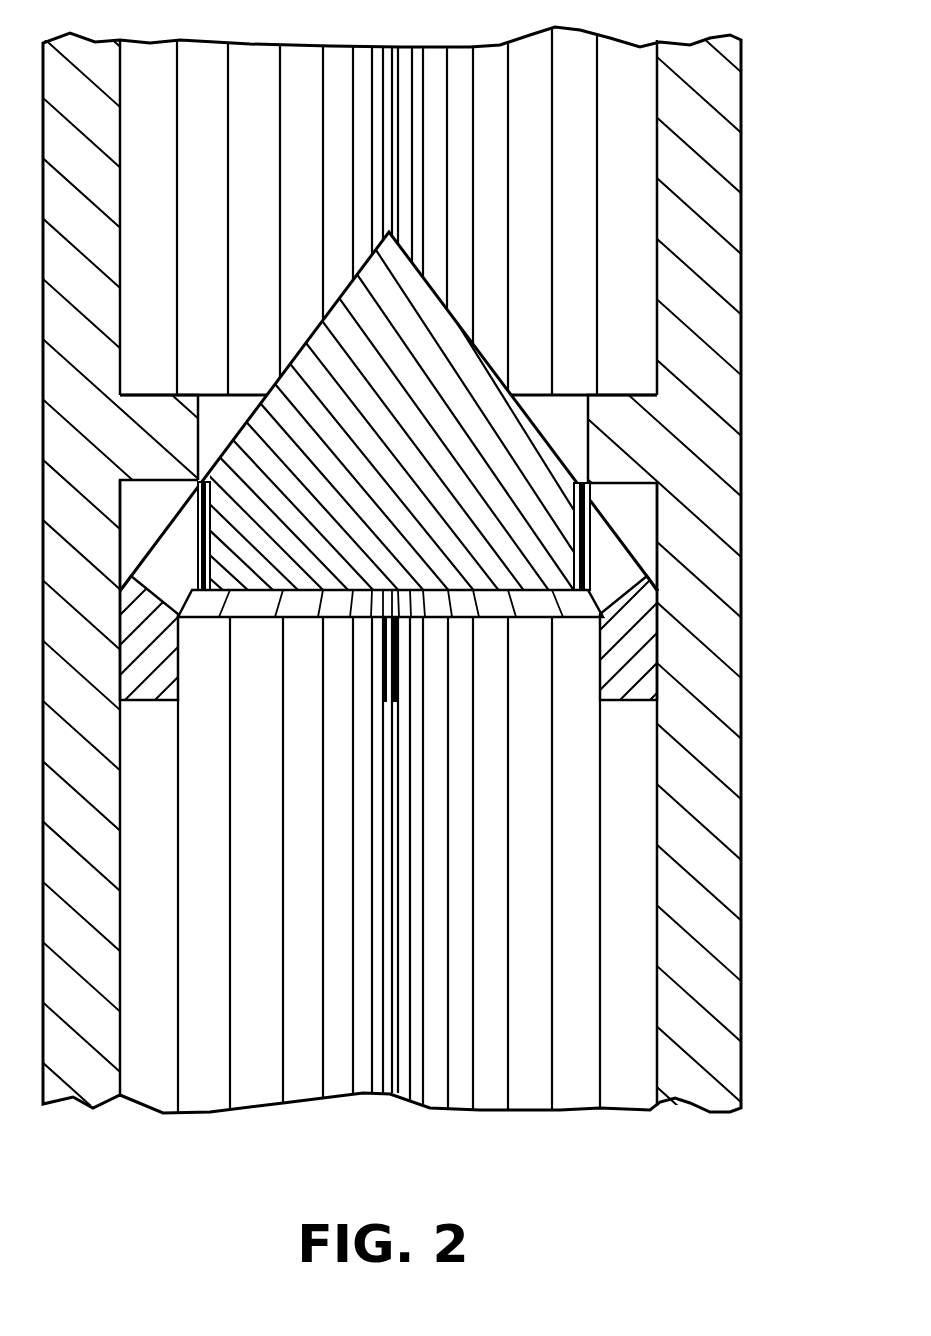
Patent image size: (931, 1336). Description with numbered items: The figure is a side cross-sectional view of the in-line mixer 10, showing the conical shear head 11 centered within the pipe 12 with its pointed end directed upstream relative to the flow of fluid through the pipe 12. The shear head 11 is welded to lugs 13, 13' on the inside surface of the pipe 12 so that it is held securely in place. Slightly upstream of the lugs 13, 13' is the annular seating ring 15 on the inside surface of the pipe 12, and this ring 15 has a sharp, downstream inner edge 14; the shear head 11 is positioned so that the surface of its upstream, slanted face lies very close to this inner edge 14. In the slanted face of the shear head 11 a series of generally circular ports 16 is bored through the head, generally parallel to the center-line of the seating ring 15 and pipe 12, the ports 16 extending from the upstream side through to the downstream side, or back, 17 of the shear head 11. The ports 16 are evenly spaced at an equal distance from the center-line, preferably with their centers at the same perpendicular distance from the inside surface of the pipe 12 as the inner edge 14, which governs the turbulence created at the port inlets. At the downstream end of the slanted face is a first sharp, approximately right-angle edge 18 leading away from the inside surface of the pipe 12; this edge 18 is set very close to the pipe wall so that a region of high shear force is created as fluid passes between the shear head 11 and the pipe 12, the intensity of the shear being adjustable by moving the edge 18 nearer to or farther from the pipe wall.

The in-line mixer 10 is at (757, 213).
The conical shear head 11 is at (372, 405).
The pipe 12 is at (272, 145).
The lug 13 is at (367, 865).
The lug 13' is at (463, 855).
The downstream inner edge 14 is at (197, 488).
The annular seating ring 15 is at (180, 447).
The ports 16 is at (210, 541).
The downstream side or back of shear head 17 is at (508, 600).
The first sharp edge 18 is at (124, 586).